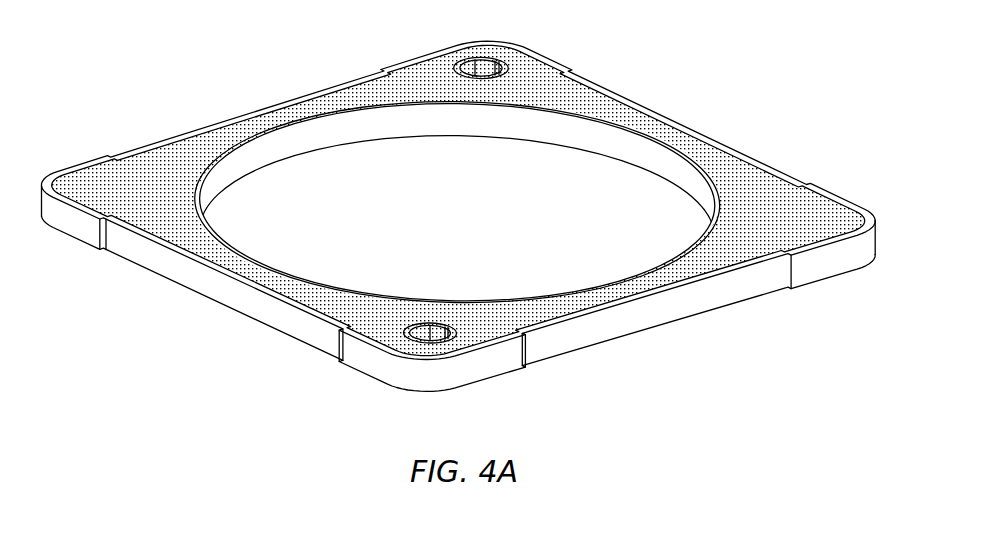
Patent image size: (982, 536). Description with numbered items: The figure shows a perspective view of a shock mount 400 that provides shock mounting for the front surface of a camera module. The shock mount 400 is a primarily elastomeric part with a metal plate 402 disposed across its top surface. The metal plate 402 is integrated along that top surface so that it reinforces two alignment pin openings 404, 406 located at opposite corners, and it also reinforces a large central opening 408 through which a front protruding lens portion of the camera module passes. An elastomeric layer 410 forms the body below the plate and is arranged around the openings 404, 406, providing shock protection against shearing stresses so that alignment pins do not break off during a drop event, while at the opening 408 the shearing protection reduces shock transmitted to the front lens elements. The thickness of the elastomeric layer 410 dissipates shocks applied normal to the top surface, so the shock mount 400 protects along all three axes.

The shock mount 400 is at (134, 75).
The metal plate 402 is at (118, 194).
The alignment pin opening 404 is at (440, 58).
The alignment pin opening 406 is at (452, 343).
The opening 408 is at (563, 223).
The elastomeric layer 410 is at (210, 297).